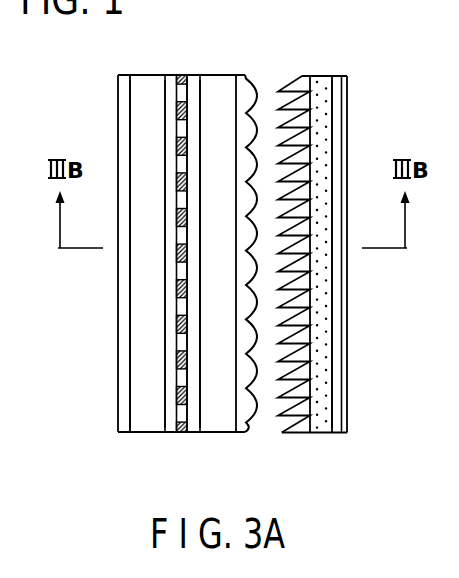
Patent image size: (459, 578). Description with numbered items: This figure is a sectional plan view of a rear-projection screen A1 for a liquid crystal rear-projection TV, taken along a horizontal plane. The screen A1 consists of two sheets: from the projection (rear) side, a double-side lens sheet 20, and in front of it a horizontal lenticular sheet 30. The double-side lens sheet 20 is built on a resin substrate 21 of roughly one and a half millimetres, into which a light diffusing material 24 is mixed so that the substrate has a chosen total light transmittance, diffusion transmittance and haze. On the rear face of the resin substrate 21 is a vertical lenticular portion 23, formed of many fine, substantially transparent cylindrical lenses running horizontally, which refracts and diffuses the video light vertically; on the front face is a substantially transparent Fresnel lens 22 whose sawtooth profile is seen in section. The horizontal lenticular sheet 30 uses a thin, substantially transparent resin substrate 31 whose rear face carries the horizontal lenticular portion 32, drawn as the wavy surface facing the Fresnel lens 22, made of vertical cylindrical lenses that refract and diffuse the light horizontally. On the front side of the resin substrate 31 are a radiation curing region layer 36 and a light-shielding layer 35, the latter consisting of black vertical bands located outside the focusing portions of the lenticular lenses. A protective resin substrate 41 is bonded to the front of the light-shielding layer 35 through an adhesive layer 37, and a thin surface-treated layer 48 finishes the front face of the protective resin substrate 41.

The horizontal lenticular sheet 30 is at (190, 62).
The double-side lens sheet 20 is at (322, 68).
The screen A1 is at (370, 99).
The surface-treated layer 48 is at (128, 362).
The protective resin substrate 41 is at (146, 427).
The adhesive layer 37 is at (170, 427).
The light-shielding layer 35 is at (182, 427).
The radiation curing region layer 36 is at (193, 427).
The resin substrate 31 is at (218, 428).
The horizontal lenticular portion 32 is at (248, 433).
The Fresnel lens 22 is at (302, 427).
The resin substrate 21 is at (317, 427).
The light diffusing material 24 is at (326, 424).
The vertical lenticular portion 23 is at (338, 342).